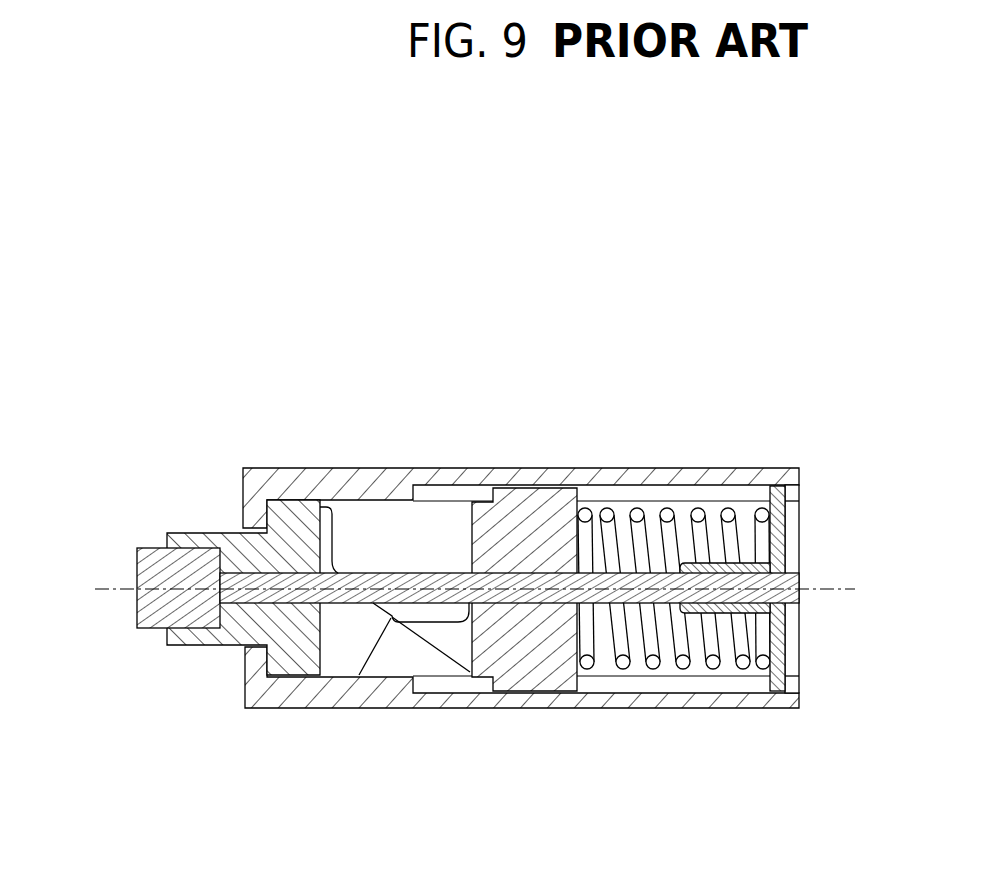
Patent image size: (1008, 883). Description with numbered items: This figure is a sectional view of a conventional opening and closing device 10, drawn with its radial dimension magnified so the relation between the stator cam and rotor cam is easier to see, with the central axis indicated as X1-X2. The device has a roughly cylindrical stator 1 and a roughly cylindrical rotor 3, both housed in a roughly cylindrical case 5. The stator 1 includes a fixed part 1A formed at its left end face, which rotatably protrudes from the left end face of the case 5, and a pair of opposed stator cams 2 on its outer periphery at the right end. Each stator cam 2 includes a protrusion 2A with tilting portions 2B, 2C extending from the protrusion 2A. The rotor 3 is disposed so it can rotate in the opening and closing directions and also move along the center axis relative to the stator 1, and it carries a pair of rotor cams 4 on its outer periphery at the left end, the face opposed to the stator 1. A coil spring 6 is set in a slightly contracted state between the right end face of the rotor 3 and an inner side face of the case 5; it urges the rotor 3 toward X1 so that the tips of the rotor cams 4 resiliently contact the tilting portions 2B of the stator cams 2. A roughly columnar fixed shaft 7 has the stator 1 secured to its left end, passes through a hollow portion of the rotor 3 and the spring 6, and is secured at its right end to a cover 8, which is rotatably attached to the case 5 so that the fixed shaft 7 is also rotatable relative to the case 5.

The opening and closing device 10 is at (788, 457).
The stator 1 is at (297, 653).
The fixed part 1A is at (195, 647).
The stator cam 2 is at (343, 632).
The protrusion 2A is at (383, 617).
The tilting portion 2B is at (372, 657).
The tilting portion 2C is at (357, 590).
The rotor 3 is at (511, 522).
The rotor cam 4 is at (432, 637).
The case 5 is at (645, 477).
The coil spring 6 is at (653, 667).
The fixed shaft 7 is at (527, 590).
The cover 8 is at (783, 688).